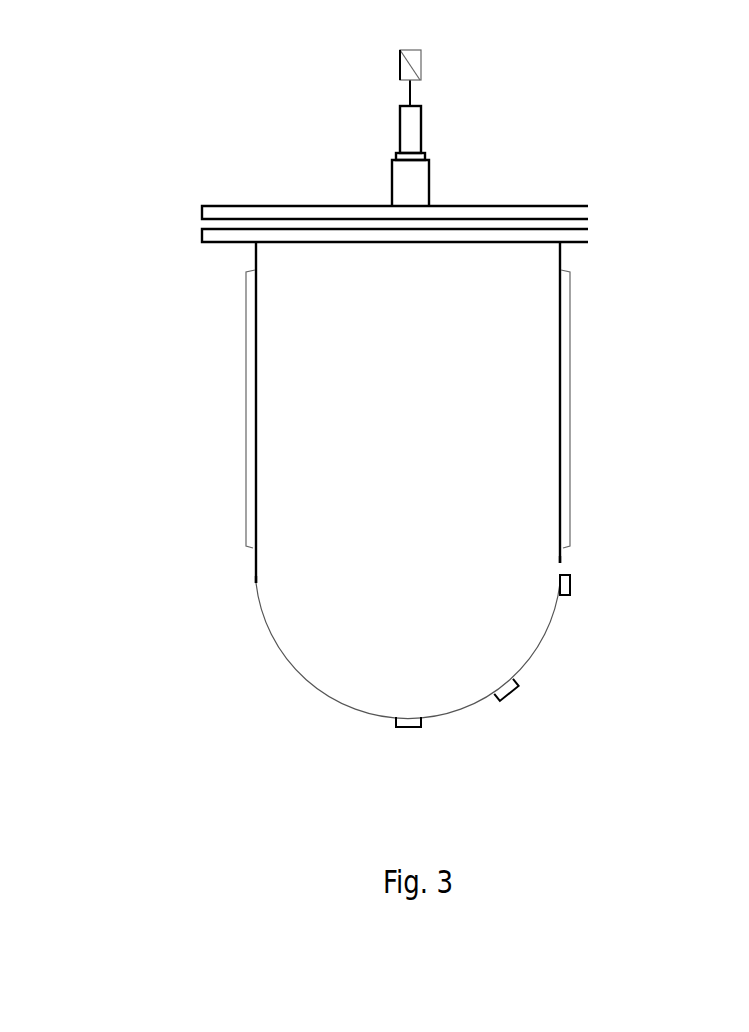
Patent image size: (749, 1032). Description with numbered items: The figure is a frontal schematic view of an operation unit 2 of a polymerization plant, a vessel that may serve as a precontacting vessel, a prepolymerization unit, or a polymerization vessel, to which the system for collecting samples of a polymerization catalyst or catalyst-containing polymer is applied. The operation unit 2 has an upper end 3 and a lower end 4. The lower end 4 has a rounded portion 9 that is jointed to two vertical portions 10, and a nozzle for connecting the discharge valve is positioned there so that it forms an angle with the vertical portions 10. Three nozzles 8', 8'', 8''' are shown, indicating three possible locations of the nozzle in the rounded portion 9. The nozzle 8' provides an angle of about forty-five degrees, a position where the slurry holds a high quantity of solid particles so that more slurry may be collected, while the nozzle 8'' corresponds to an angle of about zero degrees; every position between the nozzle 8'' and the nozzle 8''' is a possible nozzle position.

The operation unit 2 is at (166, 133).
The upper end 3 is at (143, 332).
The lower end 4 is at (390, 705).
The rounded portion 9 is at (332, 700).
The vertical portions 10 is at (256, 583).
The nozzle 8' is at (557, 736).
The nozzle 8'' is at (334, 780).
The nozzle 8''' is at (640, 584).